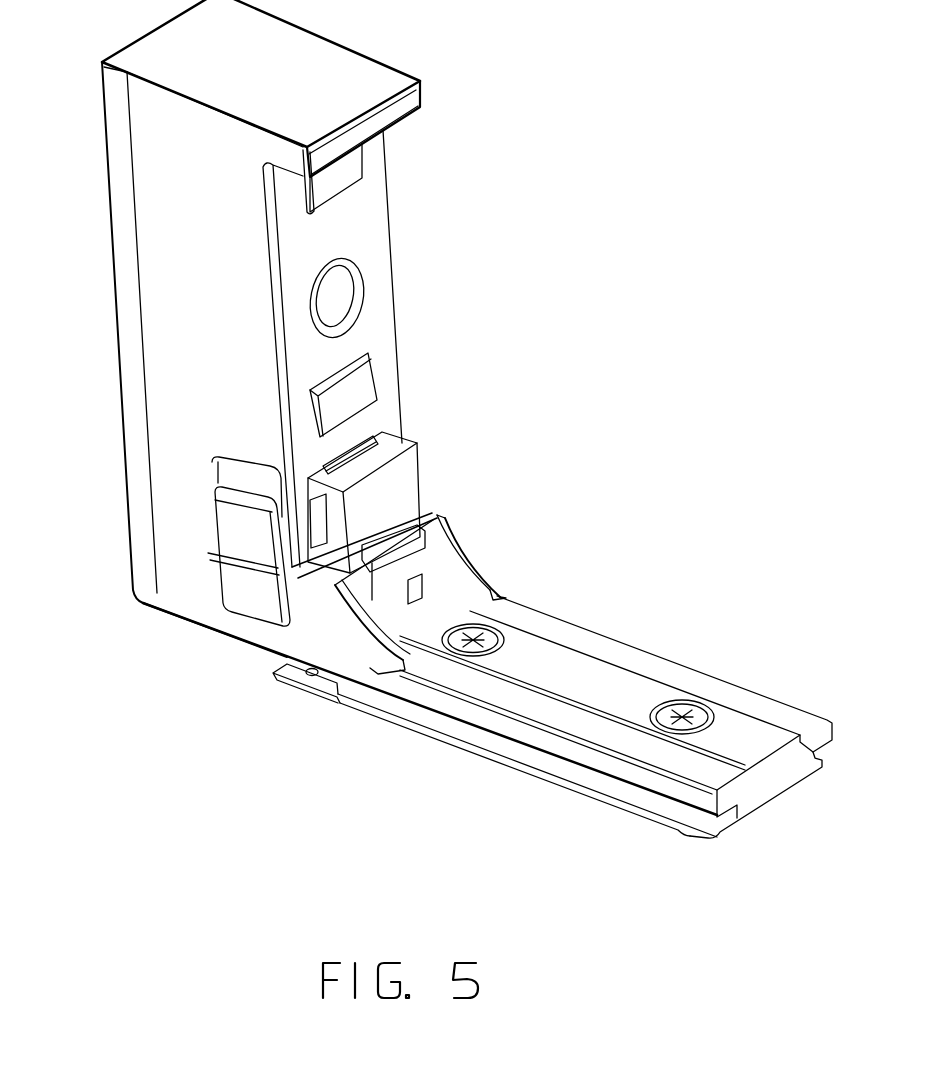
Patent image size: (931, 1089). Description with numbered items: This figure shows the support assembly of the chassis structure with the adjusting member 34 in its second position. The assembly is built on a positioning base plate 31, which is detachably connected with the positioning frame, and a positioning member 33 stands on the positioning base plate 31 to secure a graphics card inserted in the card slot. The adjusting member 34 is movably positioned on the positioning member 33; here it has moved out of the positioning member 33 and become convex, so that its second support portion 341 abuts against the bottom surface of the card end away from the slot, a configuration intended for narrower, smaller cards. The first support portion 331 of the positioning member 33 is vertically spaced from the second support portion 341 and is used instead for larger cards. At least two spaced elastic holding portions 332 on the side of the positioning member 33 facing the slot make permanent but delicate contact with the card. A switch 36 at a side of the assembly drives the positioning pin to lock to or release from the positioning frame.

The positioning base plate 31 is at (460, 728).
The positioning member 33 is at (125, 252).
The first support portion 331 is at (447, 517).
The elastic holding portions 332 is at (338, 182).
The adjusting member 34 is at (408, 470).
The second support portion 341 is at (393, 442).
The switch 36 is at (253, 610).